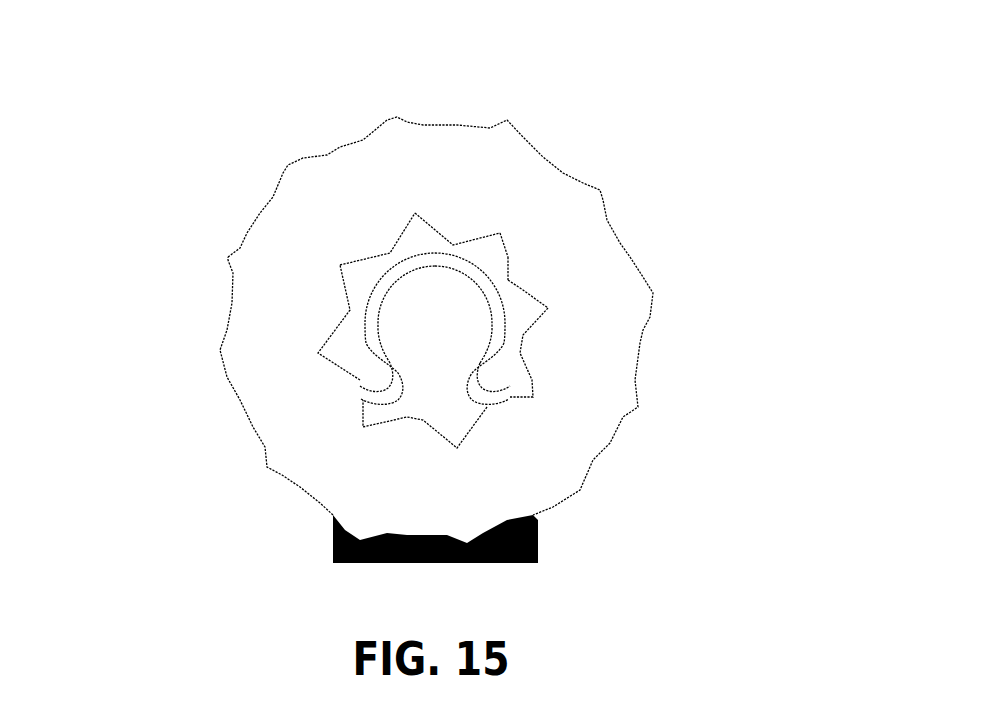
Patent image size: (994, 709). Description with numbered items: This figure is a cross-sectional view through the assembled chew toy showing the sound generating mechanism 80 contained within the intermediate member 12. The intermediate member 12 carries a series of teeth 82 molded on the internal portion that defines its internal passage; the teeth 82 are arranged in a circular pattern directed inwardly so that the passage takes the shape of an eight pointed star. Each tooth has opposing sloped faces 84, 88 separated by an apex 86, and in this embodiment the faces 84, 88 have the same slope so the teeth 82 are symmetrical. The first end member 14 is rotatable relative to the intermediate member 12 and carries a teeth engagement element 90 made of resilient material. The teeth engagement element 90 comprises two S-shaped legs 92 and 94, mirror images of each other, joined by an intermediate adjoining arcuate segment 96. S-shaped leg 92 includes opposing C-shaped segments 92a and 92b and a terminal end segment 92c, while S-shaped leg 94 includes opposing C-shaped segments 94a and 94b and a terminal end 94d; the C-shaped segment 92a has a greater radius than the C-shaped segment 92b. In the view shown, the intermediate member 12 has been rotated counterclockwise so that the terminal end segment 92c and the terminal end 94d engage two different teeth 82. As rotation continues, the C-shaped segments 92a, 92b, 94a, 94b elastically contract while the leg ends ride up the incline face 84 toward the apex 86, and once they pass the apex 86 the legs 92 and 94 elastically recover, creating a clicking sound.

The intermediate member 12 is at (303, 217).
The first end member 14 is at (333, 542).
The sound generating mechanism 80 is at (157, 116).
The teeth 82 is at (379, 231).
The sloped face/surface 84 is at (508, 257).
The apex 86 is at (508, 280).
The sloped face/surface 88 is at (508, 280).
The teeth engagement element 90 is at (430, 241).
The S-shaped leg 92 is at (535, 337).
The C-shaped segment 92a is at (463, 314).
The C-shaped segment 92b is at (499, 379).
The terminal end segment 92c is at (507, 400).
The S-shaped leg 94 is at (343, 319).
The C-shaped segment 94a is at (406, 314).
The C-shaped segment 94b is at (369, 376).
The terminal end 94d is at (363, 398).
The intermediate adjoining arcuate segment 96 is at (433, 262).